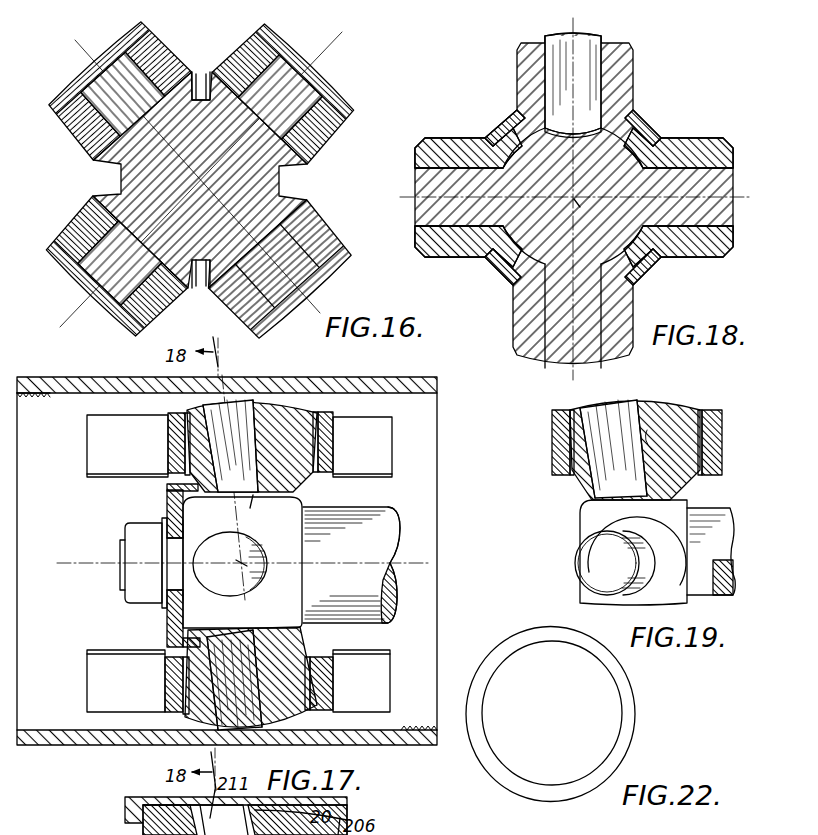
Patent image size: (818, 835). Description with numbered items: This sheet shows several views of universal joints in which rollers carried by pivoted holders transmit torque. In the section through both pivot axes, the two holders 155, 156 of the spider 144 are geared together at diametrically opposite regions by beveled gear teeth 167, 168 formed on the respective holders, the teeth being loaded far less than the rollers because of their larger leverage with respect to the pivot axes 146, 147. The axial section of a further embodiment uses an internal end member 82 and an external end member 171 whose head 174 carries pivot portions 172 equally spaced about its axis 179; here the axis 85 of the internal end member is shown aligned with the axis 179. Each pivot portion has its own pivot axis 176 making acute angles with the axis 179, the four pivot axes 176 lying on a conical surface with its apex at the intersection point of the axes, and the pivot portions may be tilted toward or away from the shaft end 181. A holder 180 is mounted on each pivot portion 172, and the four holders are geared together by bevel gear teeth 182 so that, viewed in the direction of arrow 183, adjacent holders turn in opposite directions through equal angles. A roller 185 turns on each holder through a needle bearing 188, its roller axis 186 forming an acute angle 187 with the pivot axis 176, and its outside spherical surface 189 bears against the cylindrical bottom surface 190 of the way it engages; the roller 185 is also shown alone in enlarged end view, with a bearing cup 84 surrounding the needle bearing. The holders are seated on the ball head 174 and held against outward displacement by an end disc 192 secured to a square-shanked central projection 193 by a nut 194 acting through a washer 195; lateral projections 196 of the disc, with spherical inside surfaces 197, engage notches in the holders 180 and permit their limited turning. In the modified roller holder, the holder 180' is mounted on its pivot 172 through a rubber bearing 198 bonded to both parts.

In FIG. 16, the spider cross body 144 is at (255, 178).
In FIG. 16, the pivot axis 146 is at (82, 50).
In FIG. 16, the pivot axis 147 is at (328, 44).
In FIG. 16, the holder 155 is at (160, 68).
In FIG. 16, the holder 156 is at (322, 136).
In FIG. 16, the gear teeth 167 is at (203, 72).
In FIG. 16, the gear teeth 168 is at (197, 286).
In FIG. 17, the external end member 171 is at (357, 517).
In FIG. 19, the external end member 171 is at (715, 515).
In FIG. 18, the pivot portion 172 is at (592, 55).
In FIG. 17, the pivot portion 172 is at (233, 414).
In FIG. 19, the pivot portion 172 is at (620, 413).
In FIG. 18, the head 174 is at (642, 180).
In FIG. 17, the head 174 is at (287, 532).
In FIG. 19, the head 174 is at (592, 520).
In FIG. 18, the pivot axis 176 is at (572, 28).
In FIG. 17, the pivot axis 176 is at (240, 506).
In FIG. 17, the axis 179 is at (398, 568).
In FIG. 18, the holder 180 is at (574, 236).
In FIG. 17, the holder 180 is at (273, 611).
In FIG. 19, the holder 180' is at (645, 439).
In FIG. 17, the shaft end 181 is at (347, 623).
In FIG. 18, the bevel gear teeth 182 is at (512, 125).
In FIG. 18, the arrow 183 is at (695, 77).
In FIG. 17, the roller 185 is at (333, 447).
In FIG. 19, the roller 185 is at (717, 433).
In FIG. 22, the roller 185 is at (628, 713).
In FIG. 17, the roller axis 186 is at (255, 508).
In FIG. 17, the acute angle 187 is at (275, 433).
In FIG. 17, the needle bearing 188 is at (168, 444).
In FIG. 17, the outside spherical surface 189 is at (170, 714).
In FIG. 17, the cylindrical bottom surface 190 is at (366, 393).
In FIG. 17, the end disc 192 is at (170, 503).
In FIG. 17, the central projection 193 is at (177, 582).
In FIG. 17, the nut 194 is at (146, 593).
In FIG. 17, the washer 195 is at (160, 612).
In FIG. 17, the lateral projections 196 is at (172, 489).
In FIG. 17, the spherical inside surface 197 is at (197, 630).
In FIG. 19, the rubber bearing 198 is at (640, 440).
In FIG. 17, the internal end member 82 is at (328, 390).
In FIG. 17, the bearing cup 84 is at (384, 451).
In FIG. 17, the axis 85 is at (85, 547).